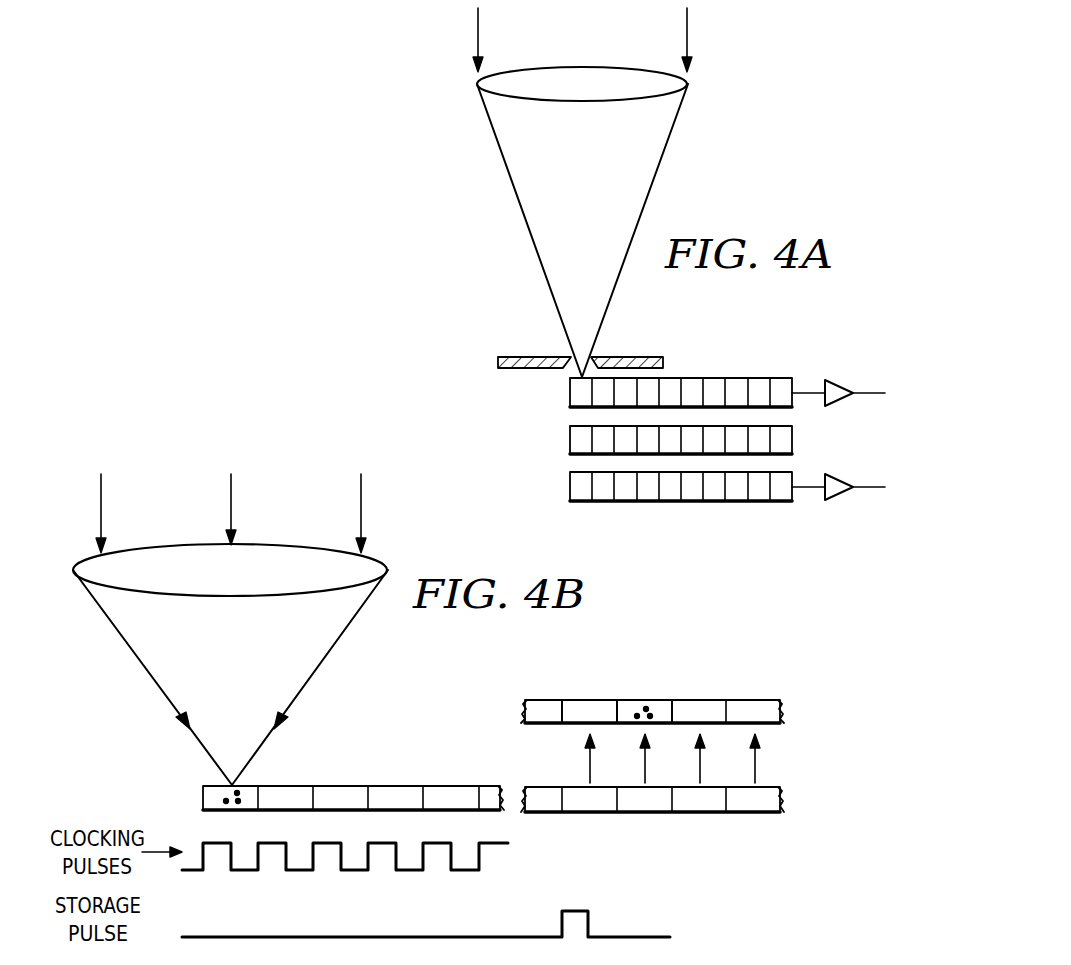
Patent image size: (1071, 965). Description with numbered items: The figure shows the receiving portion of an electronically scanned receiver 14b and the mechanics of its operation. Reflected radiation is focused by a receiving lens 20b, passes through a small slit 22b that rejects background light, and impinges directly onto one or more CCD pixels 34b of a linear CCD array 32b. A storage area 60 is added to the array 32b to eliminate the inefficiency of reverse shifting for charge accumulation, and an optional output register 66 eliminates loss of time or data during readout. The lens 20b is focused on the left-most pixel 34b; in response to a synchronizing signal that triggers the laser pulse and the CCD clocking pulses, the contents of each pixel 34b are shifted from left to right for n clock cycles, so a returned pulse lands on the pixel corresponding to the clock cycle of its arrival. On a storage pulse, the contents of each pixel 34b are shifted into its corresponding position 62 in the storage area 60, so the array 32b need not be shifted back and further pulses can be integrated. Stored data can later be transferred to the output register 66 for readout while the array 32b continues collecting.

In FIG. 4A, the receiving lens 20b is at (540, 78).
In FIG. 4B, the receiving lens 20b is at (182, 553).
In FIG. 4A, the receiver 14b is at (518, 309).
In FIG. 4A, the slit 22b is at (626, 355).
In FIG. 4A, the linear CCD array 32b is at (570, 385).
In FIG. 4B, the linear CCD array 32b is at (782, 800).
In FIG. 4B, the CCD pixel 34b is at (454, 790).
In FIG. 4A, the storage area 60 is at (570, 436).
In FIG. 4B, the storage area 60 is at (635, 680).
In FIG. 4B, the storage position 62 is at (577, 703).
In FIG. 4A, the output CCD register 66 is at (570, 481).